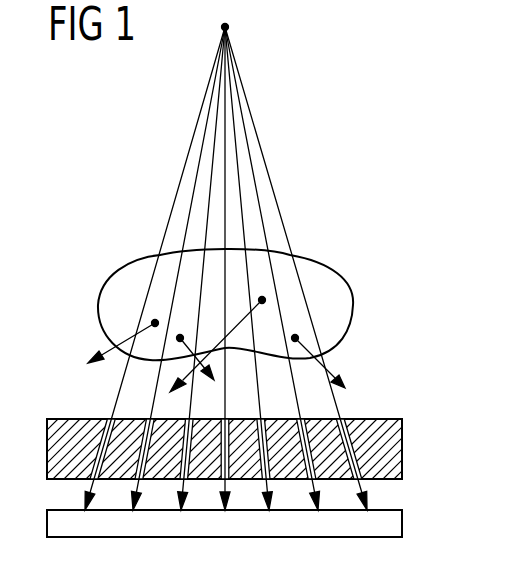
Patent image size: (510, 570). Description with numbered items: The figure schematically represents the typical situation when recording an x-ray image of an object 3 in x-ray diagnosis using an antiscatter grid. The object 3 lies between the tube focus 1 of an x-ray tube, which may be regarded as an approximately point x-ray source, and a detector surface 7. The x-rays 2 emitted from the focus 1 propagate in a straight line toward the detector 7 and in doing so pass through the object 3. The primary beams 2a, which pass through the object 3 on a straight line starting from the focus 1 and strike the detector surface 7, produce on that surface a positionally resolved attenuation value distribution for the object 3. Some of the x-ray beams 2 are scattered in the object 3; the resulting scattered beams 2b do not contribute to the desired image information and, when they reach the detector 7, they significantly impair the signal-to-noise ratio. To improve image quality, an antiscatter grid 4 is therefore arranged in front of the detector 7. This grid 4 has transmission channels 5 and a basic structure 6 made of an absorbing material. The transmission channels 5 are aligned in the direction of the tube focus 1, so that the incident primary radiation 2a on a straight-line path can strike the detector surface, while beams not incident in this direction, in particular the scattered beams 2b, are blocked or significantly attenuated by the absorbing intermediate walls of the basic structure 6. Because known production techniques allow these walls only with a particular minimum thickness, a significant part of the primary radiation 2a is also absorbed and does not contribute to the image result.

The tube focus 1 is at (228, 25).
The x-rays 2 is at (240, 268).
The primary beams 2a is at (337, 412).
The scattered beams 2b is at (330, 377).
The object 3 is at (323, 280).
The antiscatter grid 4 is at (403, 447).
The transmission channels 5 is at (108, 419).
The basic structure 6 is at (132, 419).
The detector surface 7 is at (402, 523).